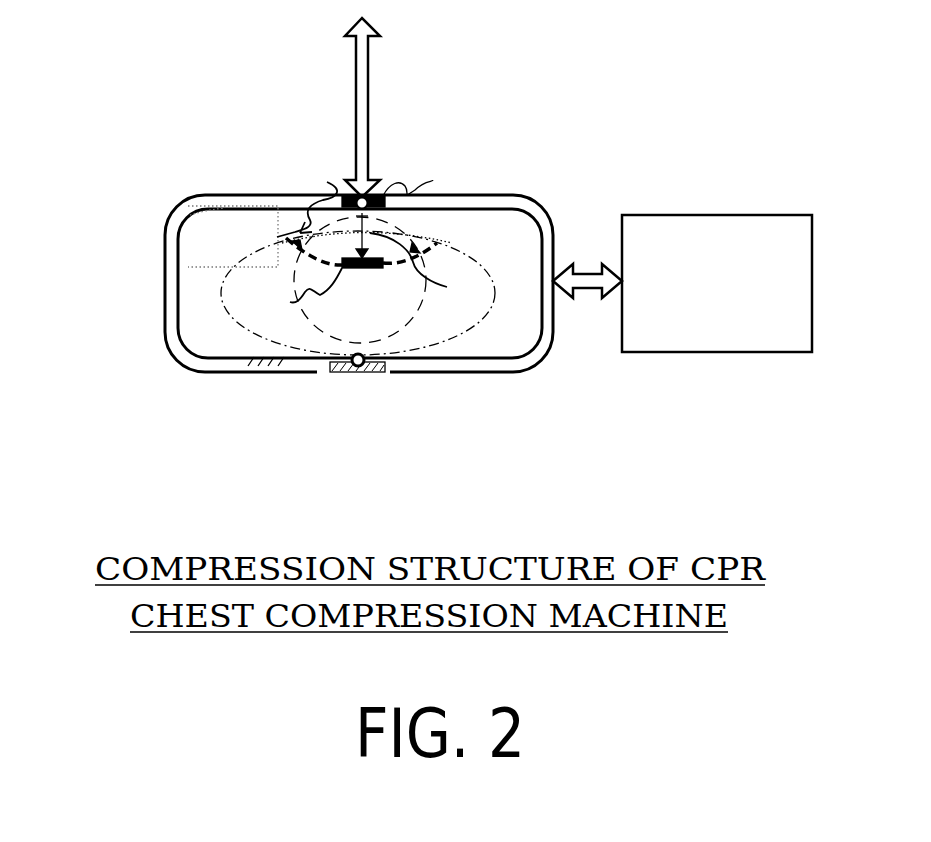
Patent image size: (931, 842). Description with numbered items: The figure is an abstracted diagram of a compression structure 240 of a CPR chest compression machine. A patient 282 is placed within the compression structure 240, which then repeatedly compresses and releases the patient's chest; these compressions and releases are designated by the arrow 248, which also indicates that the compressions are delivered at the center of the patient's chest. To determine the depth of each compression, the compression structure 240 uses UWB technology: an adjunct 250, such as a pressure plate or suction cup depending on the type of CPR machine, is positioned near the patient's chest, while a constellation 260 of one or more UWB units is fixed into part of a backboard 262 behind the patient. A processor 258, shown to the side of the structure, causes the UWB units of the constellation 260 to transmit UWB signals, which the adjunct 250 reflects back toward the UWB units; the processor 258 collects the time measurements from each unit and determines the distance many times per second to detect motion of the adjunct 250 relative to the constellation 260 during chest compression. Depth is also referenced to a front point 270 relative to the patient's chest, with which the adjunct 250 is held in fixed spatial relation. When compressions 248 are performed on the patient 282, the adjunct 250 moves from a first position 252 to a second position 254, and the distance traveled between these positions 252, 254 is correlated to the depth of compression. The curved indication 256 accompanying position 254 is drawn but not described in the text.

The compression structure 240 is at (168, 218).
The arrow 248 is at (356, 142).
The adjunct 250 is at (257, 234).
The position 252 is at (435, 178).
The position 254 is at (296, 289).
The right chest deflection arrow 256 is at (424, 271).
The processor 258 is at (740, 282).
The constellation 260 is at (357, 368).
The backboard 262 is at (457, 372).
The front point 270 is at (327, 182).
The patient 282 is at (442, 247).